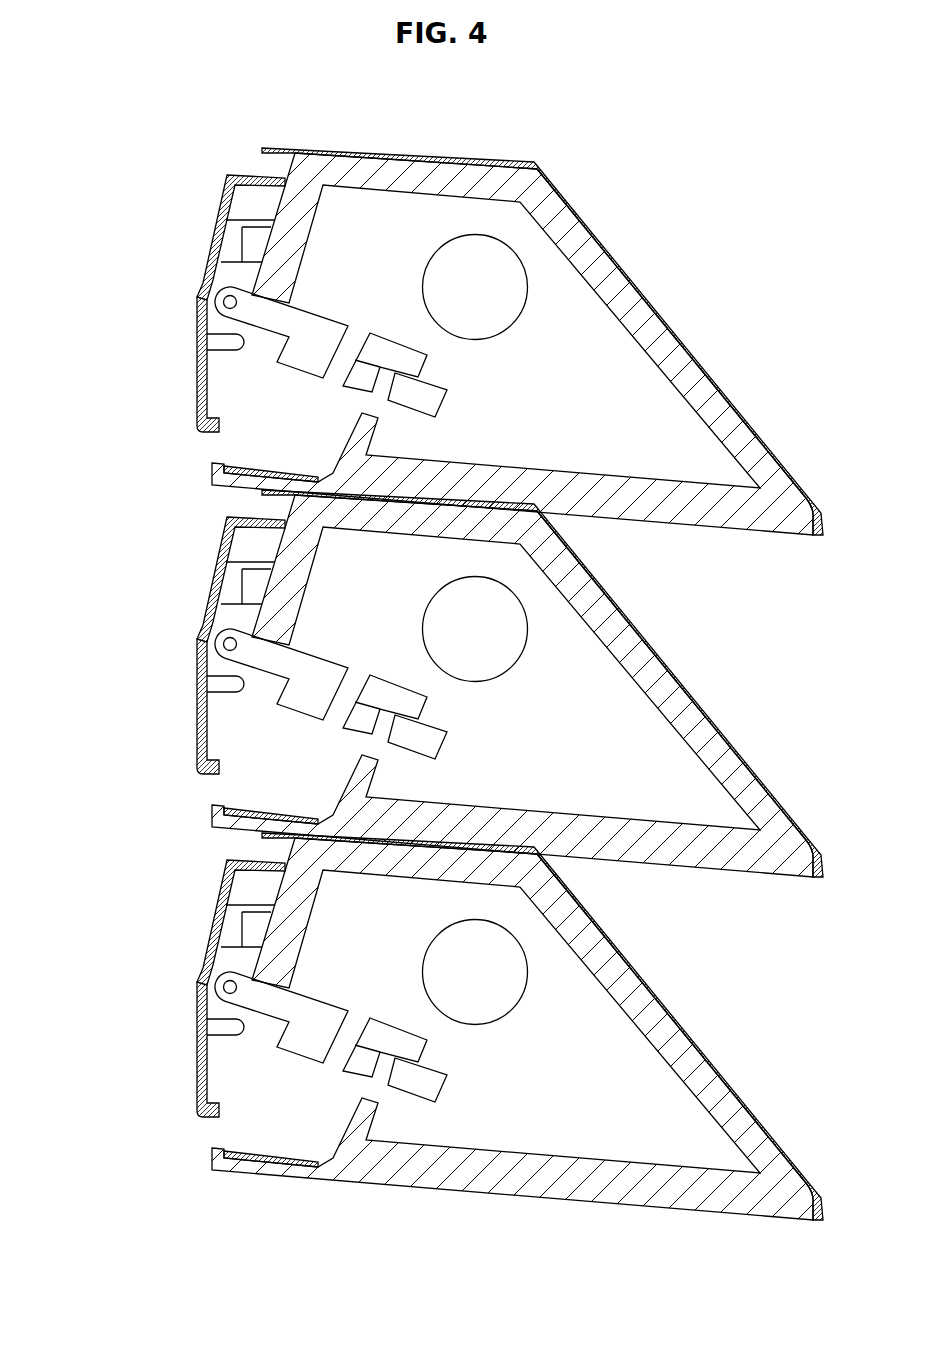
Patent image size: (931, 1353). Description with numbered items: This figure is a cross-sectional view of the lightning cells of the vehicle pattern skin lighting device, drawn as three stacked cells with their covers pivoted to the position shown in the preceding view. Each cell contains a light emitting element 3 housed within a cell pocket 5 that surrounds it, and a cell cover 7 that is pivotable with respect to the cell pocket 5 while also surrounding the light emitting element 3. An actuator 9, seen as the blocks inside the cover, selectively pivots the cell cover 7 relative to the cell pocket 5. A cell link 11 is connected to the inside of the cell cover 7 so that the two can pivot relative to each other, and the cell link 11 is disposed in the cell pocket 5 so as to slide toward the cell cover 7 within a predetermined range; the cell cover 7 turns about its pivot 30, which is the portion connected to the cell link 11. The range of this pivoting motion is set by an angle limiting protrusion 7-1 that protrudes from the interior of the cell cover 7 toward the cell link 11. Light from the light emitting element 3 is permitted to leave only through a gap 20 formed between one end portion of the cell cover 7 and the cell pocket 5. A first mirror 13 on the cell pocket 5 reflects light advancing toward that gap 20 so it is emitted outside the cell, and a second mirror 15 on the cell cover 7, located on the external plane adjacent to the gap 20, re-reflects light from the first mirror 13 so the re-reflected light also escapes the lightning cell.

The light emitting element 3 is at (501, 617).
The cell pocket 5 is at (651, 669).
The cell cover 7 is at (226, 539).
The angle limiting protrusion 7-1 is at (216, 684).
The actuator 9 is at (236, 590).
The cell link 11 is at (317, 667).
The first mirror 13 is at (234, 816).
The second mirror 15 is at (198, 706).
The gap 20 is at (221, 451).
The pivot 30 is at (223, 302).